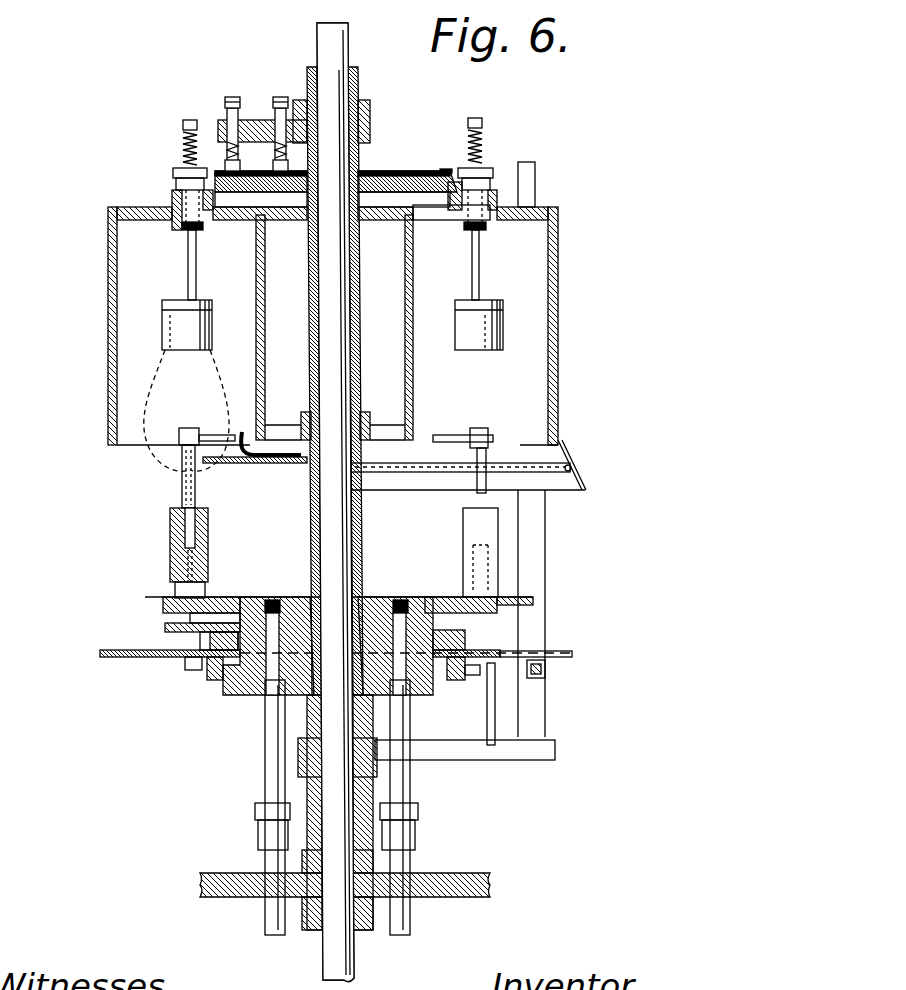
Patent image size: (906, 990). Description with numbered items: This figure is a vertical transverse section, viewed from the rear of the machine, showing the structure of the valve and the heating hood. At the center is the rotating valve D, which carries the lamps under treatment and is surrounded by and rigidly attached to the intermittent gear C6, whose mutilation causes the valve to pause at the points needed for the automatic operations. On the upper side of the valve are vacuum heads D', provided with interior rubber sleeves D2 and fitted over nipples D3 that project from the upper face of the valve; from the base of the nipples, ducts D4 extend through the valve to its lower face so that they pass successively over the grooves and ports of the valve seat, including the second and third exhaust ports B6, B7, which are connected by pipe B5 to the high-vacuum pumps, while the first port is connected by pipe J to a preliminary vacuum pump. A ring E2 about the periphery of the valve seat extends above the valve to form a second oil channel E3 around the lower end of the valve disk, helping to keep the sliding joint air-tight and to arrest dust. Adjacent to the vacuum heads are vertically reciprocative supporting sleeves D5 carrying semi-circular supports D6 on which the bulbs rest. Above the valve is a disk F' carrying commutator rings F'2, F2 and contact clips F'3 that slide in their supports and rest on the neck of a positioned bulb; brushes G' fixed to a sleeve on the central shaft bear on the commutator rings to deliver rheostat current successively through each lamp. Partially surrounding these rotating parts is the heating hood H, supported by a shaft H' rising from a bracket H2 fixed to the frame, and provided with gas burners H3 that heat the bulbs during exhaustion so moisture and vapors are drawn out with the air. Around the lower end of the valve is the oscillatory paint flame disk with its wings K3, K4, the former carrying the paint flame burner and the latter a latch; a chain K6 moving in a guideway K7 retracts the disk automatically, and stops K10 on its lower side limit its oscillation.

The disk F' is at (336, 502).
The commutator rings F'2 is at (440, 150).
The brushes G' is at (262, 122).
The heating hood H is at (351, 303).
The contact clips F'3 is at (332, 294).
The gas burners H3 is at (415, 445).
The semi-circular supports D6 is at (218, 430).
The supporting sleeves D5 is at (182, 490).
The rubber sleeves D2 is at (170, 555).
The nipples D3 is at (175, 588).
The vacuum heads D' is at (353, 552).
The ducts D4 is at (228, 620).
The valve D is at (336, 584).
The third exhaust port B7 is at (250, 695).
The wing K3 is at (132, 628).
The chain K6 is at (185, 665).
The guideway K7 is at (210, 668).
The intermittent gear C6 is at (470, 645).
The wing K4 is at (550, 652).
The ring E2 is at (435, 690).
The second oil channel E3 is at (458, 692).
The commutator rings F2 is at (504, 704).
The shaft H' is at (555, 613).
The stops K10 is at (545, 675).
The bracket H2 is at (555, 752).
The second exhaust port B6 is at (405, 690).
The pipe B5 is at (265, 770).
The pipe J is at (410, 860).